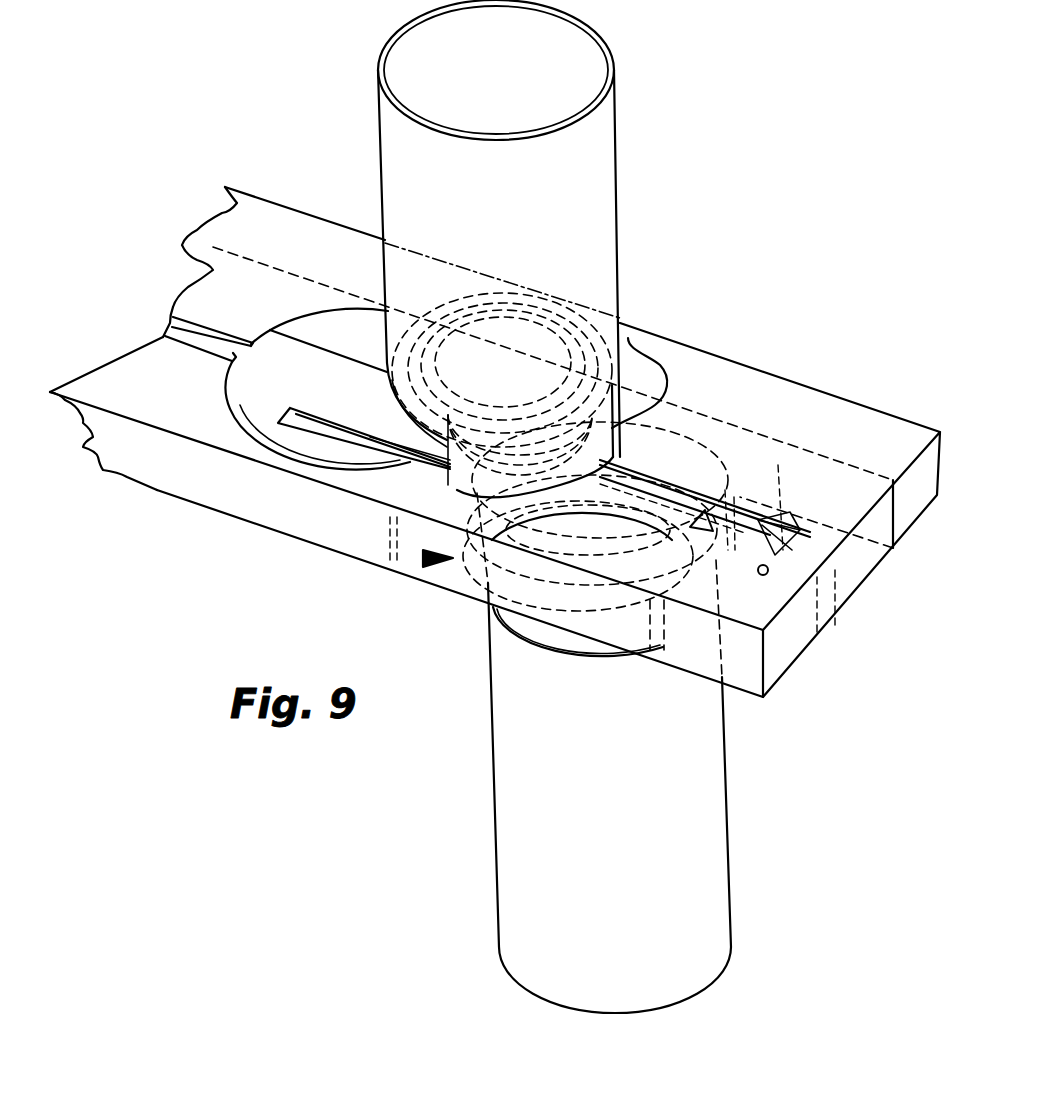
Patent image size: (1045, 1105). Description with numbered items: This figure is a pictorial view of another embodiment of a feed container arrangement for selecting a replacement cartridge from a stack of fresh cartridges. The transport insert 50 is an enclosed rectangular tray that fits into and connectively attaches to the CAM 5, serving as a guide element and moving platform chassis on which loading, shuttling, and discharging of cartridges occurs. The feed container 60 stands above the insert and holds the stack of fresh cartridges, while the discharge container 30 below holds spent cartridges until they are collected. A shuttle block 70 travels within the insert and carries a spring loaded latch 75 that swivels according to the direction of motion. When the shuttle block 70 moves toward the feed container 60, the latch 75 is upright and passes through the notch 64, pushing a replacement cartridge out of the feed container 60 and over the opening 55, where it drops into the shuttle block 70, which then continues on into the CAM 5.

The CAM 5 is at (148, 318).
The discharge container 30 is at (630, 794).
The transport insert 50 is at (176, 476).
The opening 55 is at (352, 399).
The feed container 60 is at (512, 199).
The notch 64 is at (628, 338).
The shuttle block 70 is at (423, 558).
The spring loaded latch 75 is at (820, 557).